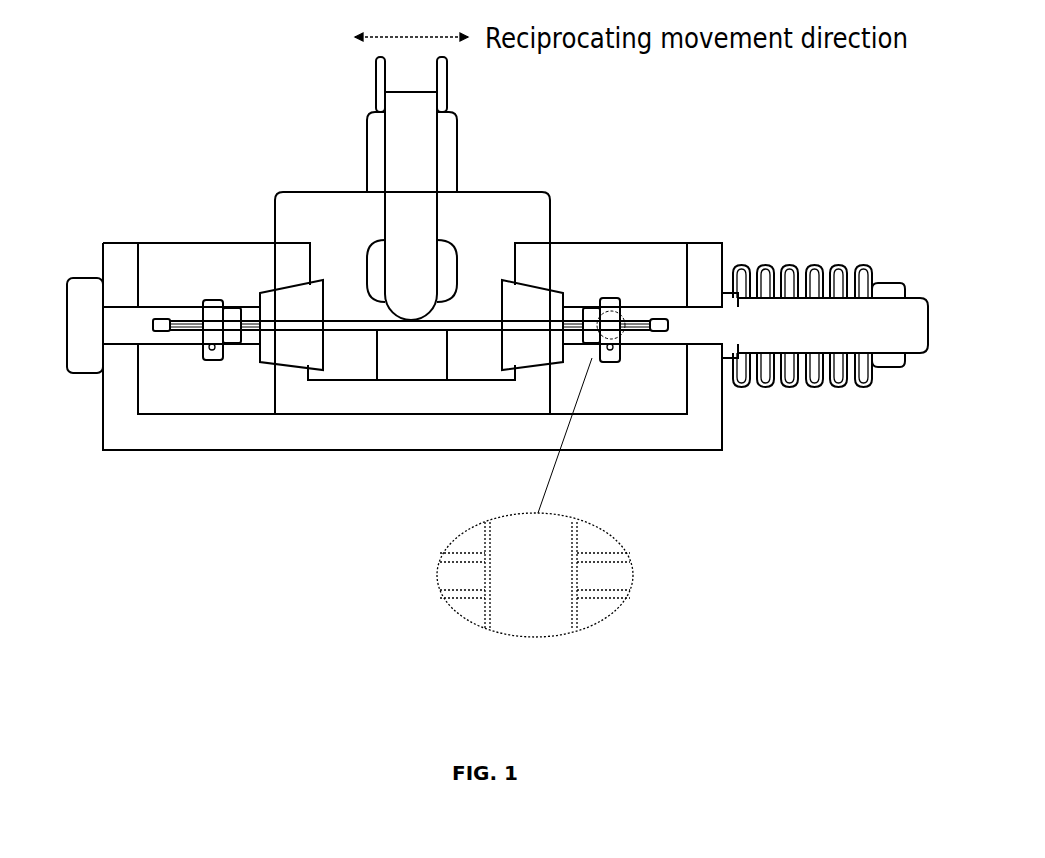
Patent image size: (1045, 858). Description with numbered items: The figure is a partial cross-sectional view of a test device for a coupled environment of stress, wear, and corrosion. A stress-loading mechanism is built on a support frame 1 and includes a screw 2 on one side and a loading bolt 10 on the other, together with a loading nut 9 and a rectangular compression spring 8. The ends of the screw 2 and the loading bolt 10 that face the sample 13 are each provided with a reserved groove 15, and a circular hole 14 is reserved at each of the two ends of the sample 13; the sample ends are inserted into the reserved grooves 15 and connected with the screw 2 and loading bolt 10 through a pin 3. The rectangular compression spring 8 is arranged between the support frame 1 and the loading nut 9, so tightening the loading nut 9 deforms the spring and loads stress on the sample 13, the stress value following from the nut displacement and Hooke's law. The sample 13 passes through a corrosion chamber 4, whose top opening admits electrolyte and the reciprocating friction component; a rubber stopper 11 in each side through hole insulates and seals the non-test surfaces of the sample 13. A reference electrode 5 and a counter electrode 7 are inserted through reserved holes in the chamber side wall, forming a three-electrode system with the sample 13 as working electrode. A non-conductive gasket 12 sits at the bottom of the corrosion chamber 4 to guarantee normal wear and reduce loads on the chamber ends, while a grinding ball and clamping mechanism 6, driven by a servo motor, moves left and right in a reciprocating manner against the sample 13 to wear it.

The support frame 1 is at (120, 380).
The screw 2 is at (152, 313).
The pin 3 is at (207, 313).
The corrosion chamber 4 is at (293, 276).
The reference electrode 5 is at (375, 268).
The grinding ball and clamping mechanism 6 is at (410, 273).
The counter electrode 7 is at (447, 268).
The rectangular compression spring 8 is at (770, 285).
The loading nut 9 is at (885, 292).
The loading bolt 10 is at (783, 338).
The rubber stopper 11 is at (540, 350).
The gasket 12 is at (413, 362).
The sample 13 is at (247, 332).
The circular hole 14 is at (572, 580).
The reserved groove 15 is at (158, 332).